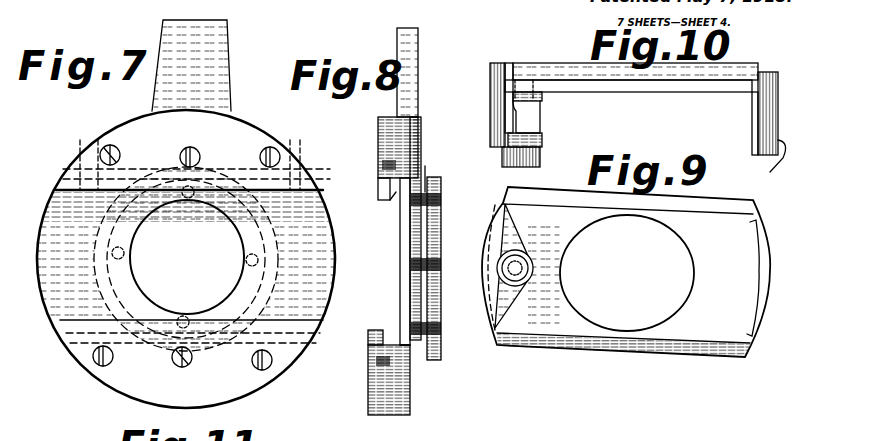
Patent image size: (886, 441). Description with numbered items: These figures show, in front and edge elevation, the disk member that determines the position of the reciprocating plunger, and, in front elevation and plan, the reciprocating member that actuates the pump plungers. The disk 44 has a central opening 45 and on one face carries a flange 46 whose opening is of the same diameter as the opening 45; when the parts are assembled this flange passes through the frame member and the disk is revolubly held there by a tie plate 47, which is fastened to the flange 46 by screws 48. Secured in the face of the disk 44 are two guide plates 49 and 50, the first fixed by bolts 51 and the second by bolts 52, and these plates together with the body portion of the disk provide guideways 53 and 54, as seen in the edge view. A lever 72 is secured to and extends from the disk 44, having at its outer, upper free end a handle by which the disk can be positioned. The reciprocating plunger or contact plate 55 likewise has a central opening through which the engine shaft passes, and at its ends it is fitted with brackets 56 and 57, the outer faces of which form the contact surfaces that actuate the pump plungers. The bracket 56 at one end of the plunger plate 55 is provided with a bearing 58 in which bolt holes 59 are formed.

In FIG. 7, the lever 72 is at (191, 65).
In FIG. 8, the lever 72 is at (418, 44).
In FIG. 7, the disk 44 is at (62, 196).
In FIG. 8, the disk 44 is at (402, 250).
In FIG. 7, the central opening 45 is at (187, 257).
In FIG. 7, the flange 46 is at (112, 276).
In FIG. 8, the flange 46 is at (438, 170).
In FIG. 7, the tie plate 47 is at (90, 262).
In FIG. 8, the tie plate 47 is at (442, 184).
In FIG. 8, the screws 48 is at (441, 204).
In FIG. 7, the guide plate 49 is at (249, 154).
In FIG. 8, the guide plate 49 is at (378, 145).
In FIG. 7, the guide plate 50 is at (235, 367).
In FIG. 8, the guide plate 50 is at (378, 380).
In FIG. 7, the bolts 51 is at (182, 151).
In FIG. 8, the bolts 51 is at (378, 174).
In FIG. 7, the bolts 52 is at (176, 360).
In FIG. 8, the bolts 52 is at (376, 361).
In FIG. 8, the guideway 53 is at (392, 202).
In FIG. 8, the guideway 54 is at (390, 342).
In FIG. 10, the reciprocating plunger plate 55 is at (656, 92).
In FIG. 9, the reciprocating plunger plate 55 is at (566, 326).
In FIG. 10, the bracket 56 is at (490, 109).
In FIG. 9, the bracket 56 is at (495, 270).
In FIG. 10, the bracket 57 is at (769, 168).
In FIG. 9, the bracket 57 is at (765, 274).
In FIG. 10, the bearing 58 is at (543, 101).
In FIG. 10, the bolt holes 59 is at (526, 101).